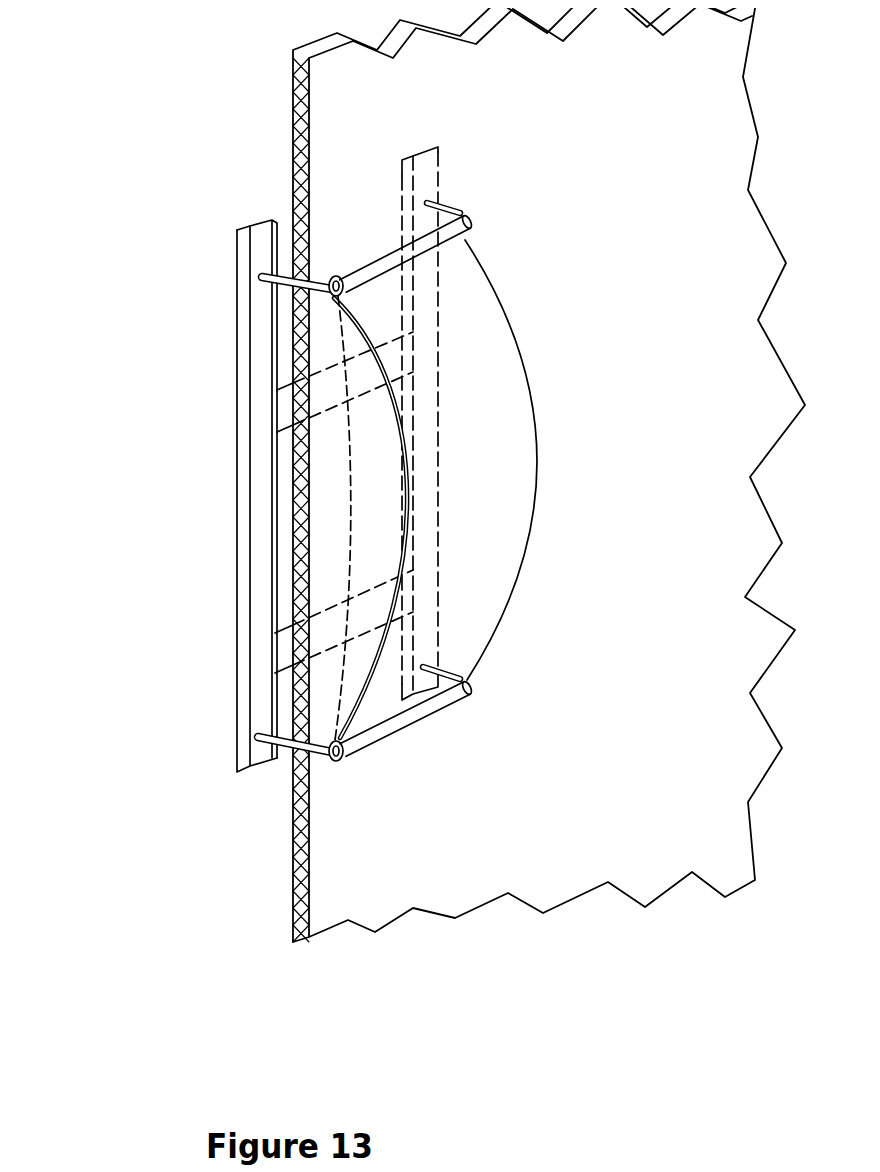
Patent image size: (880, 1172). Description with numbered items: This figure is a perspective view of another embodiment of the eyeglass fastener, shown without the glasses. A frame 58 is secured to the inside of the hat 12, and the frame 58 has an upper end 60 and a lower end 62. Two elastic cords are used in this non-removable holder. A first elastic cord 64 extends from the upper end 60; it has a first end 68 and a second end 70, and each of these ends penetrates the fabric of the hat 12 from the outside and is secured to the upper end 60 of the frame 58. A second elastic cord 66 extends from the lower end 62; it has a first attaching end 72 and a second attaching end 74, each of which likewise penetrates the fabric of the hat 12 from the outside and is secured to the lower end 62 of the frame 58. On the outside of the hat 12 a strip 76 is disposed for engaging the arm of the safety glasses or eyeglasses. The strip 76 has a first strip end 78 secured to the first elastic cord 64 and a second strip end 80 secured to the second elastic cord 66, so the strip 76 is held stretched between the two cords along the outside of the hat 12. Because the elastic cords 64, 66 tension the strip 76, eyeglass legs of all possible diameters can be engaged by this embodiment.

The hat 12 is at (297, 105).
The frame 58 is at (232, 429).
The upper end 60 is at (237, 307).
The lower end 62 is at (237, 655).
The first elastic cord 64 is at (337, 277).
The second elastic cord 66 is at (315, 757).
The first end 68 is at (292, 277).
The second end 70 is at (477, 222).
The first attaching end 72 is at (280, 760).
The second attaching end 74 is at (470, 688).
The strip 76 is at (540, 405).
The first strip end 78 is at (413, 220).
The second strip end 80 is at (385, 737).